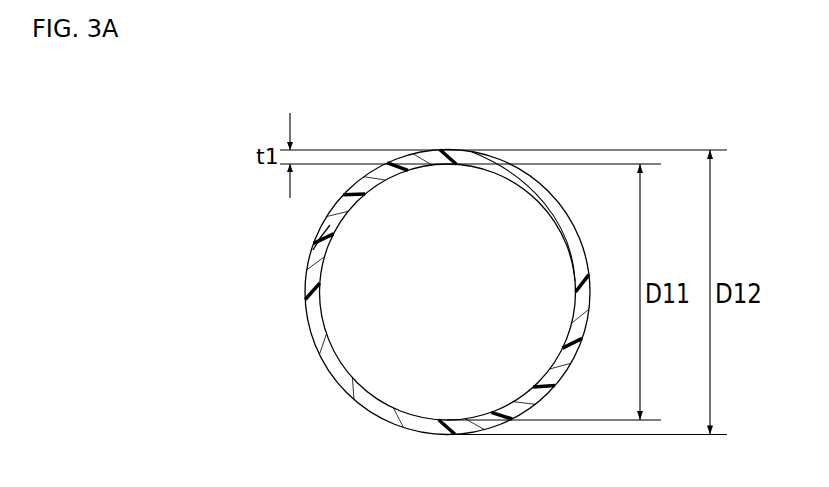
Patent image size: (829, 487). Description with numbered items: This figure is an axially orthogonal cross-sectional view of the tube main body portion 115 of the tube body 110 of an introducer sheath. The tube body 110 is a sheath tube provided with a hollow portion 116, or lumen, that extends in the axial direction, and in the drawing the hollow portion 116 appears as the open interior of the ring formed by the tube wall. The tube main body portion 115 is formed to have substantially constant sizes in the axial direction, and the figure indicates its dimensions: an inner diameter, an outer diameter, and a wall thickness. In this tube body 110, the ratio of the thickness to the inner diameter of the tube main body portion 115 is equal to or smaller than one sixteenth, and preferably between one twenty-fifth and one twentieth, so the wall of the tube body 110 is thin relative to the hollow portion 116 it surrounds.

The tube body 110 is at (224, 97).
The tube main body portion 115 is at (316, 244).
The hollow portion 116 is at (309, 290).